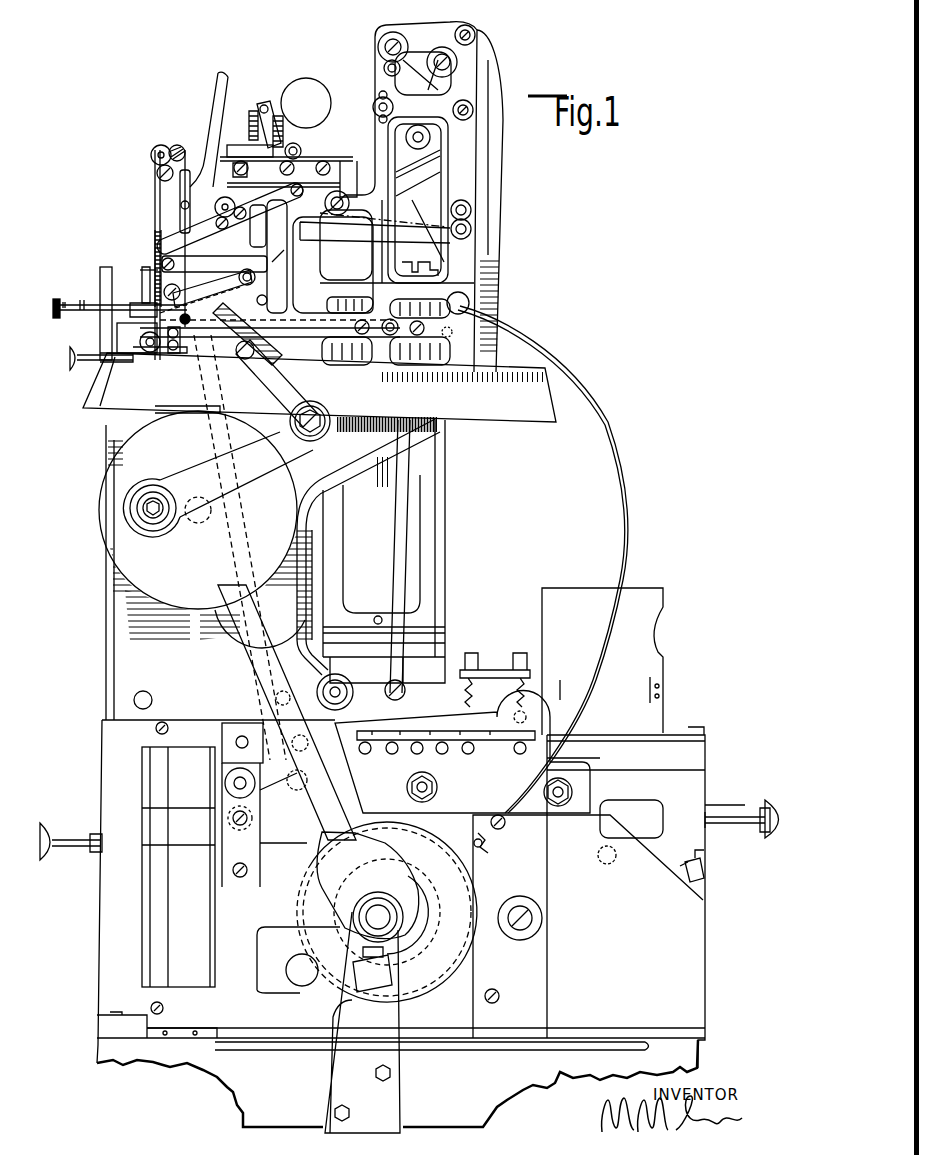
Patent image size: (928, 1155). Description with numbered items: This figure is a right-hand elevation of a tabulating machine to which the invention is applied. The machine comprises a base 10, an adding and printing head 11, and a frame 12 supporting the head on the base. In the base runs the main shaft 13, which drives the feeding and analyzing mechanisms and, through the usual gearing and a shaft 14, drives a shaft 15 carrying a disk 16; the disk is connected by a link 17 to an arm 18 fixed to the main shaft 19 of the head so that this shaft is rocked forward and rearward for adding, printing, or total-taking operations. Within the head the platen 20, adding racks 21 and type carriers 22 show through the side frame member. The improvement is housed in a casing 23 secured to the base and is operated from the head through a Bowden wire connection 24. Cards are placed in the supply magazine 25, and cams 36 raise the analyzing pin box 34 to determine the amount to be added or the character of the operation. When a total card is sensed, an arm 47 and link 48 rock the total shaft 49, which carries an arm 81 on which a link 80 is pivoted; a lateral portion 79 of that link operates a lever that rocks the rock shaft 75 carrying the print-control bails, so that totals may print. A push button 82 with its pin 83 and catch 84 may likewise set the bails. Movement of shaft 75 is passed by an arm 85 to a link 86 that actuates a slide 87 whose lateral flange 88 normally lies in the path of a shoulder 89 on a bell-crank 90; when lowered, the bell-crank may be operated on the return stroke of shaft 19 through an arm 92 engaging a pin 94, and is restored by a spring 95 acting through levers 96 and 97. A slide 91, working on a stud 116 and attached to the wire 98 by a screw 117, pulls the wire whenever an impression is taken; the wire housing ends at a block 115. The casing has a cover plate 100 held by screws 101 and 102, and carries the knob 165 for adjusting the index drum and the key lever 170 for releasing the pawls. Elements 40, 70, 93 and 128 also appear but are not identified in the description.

The base 10 is at (92, 925).
The adding and printing head 11 is at (325, 197).
The frame 12 is at (263, 569).
The main shaft 13 is at (387, 977).
The shaft 14 is at (316, 800).
The shaft 15 is at (203, 516).
The disk 16 is at (198, 510).
The link 17 is at (226, 469).
The arm 18 is at (276, 383).
The main shaft of the adding and printing head 19 is at (238, 360).
The platen 20 is at (306, 103).
The adding racks 21 is at (421, 238).
The type carriers 22 is at (264, 105).
The casing 23 is at (713, 959).
The Bowden wire connection 24 is at (548, 552).
The supply magazine 25 is at (602, 661).
The analyzing pin box 34 is at (438, 795).
The cams 36 is at (335, 955).
The bracket window 40 is at (356, 250).
The arm 47 is at (282, 800).
The link 48 is at (252, 542).
The total shaft 49 is at (152, 353).
The knurled nut 70 is at (248, 118).
The rock shaft 75 is at (161, 147).
The lateral portion 79 is at (144, 262).
The link 80 is at (145, 284).
The arm 81 is at (140, 305).
The push button 82 is at (112, 320).
The pin 83 is at (64, 300).
The catch 84 is at (82, 299).
The arm 85 is at (183, 143).
The link 86 is at (157, 175).
The slide 87 is at (171, 353).
The lateral flange 88 is at (178, 353).
The shoulder 89 is at (212, 288).
The bell-crank 90 is at (200, 291).
The slide 91 is at (214, 265).
The arm 92 is at (192, 322).
The rod 93 is at (276, 321).
The pin 94 is at (259, 299).
The spring 95 is at (432, 226).
The lever 96 is at (326, 206).
The lever 97 is at (229, 218).
The wire 98 is at (372, 554).
The cover plate 100 is at (588, 926).
The screw 101 is at (506, 824).
The screw 102 is at (494, 990).
The block 115 is at (322, 265).
The stud 116 is at (287, 256).
The screw 117 is at (271, 226).
The spring 128 is at (497, 849).
The knob 165 is at (545, 918).
The key lever 170 is at (703, 868).